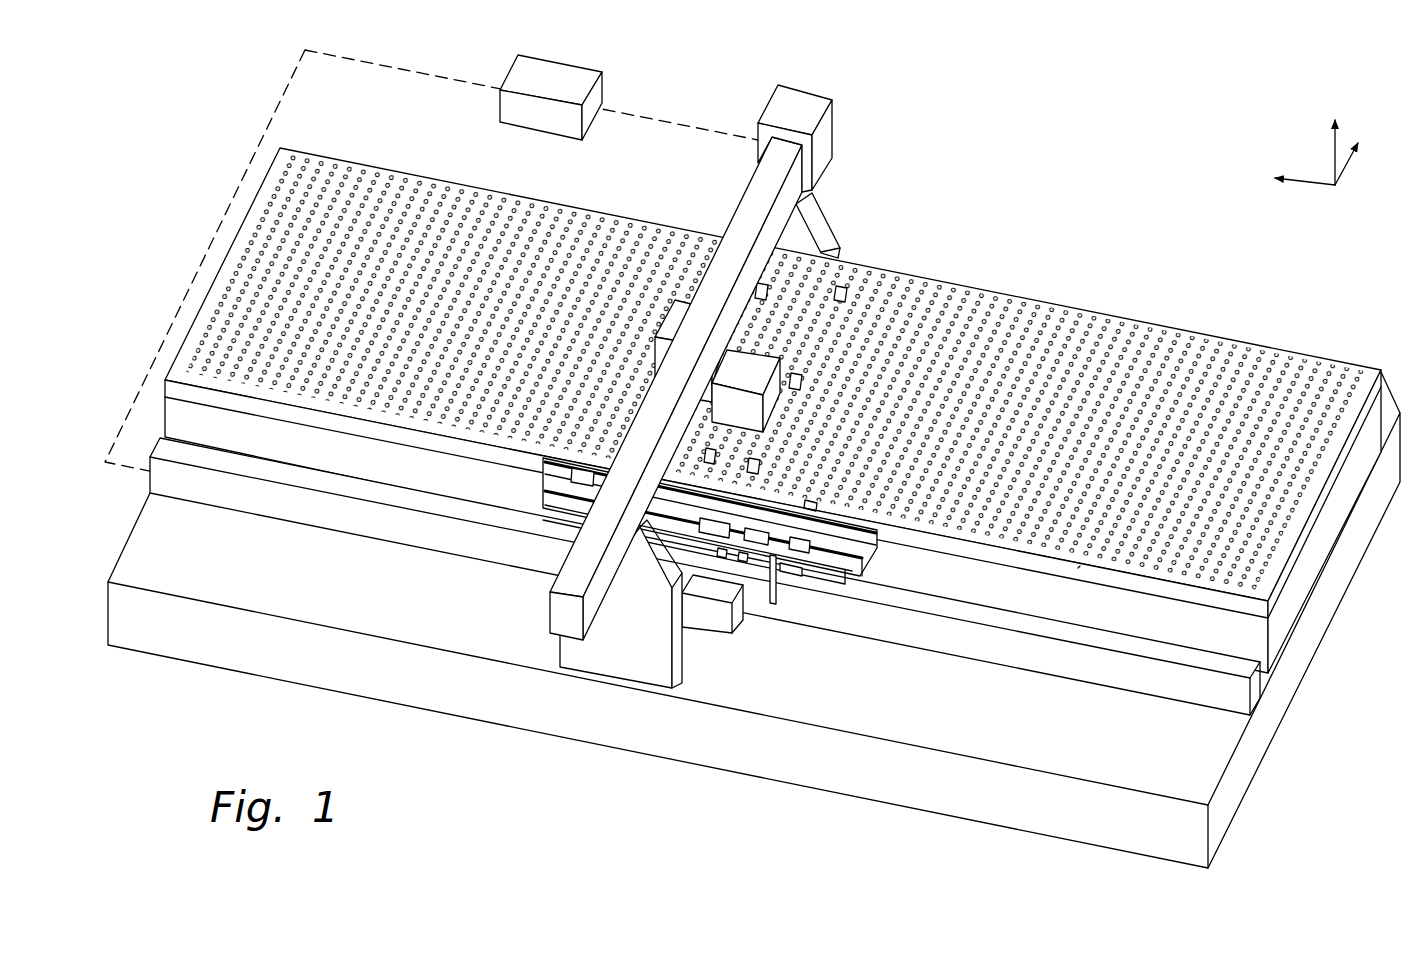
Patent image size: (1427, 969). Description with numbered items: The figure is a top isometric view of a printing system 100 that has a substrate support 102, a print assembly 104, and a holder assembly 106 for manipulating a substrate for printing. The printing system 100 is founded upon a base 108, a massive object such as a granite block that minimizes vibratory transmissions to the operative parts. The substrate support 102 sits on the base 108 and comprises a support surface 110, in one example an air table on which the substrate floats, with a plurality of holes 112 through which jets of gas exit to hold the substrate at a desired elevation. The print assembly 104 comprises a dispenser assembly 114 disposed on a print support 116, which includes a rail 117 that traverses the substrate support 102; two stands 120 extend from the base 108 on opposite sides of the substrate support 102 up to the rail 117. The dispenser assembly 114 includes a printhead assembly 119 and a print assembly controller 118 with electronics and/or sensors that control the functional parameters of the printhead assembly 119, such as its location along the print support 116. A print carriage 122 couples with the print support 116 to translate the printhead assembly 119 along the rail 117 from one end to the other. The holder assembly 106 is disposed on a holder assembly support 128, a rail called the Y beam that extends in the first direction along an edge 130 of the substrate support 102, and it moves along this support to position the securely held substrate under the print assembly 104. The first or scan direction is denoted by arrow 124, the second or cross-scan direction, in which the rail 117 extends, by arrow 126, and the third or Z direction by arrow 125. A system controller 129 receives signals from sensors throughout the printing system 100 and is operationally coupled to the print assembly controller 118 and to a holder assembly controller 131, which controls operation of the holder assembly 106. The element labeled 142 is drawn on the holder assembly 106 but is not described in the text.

The printing system 100 is at (1140, 74).
The substrate support 102 is at (782, 410).
The print assembly 104 is at (718, 377).
The holder assembly 106 is at (734, 570).
The base 108 is at (724, 766).
The support surface 110 is at (775, 371).
The holes 112 is at (996, 301).
The dispenser assembly 114 is at (792, 342).
The print support 116 is at (718, 384).
The rail 117 is at (735, 214).
The print assembly controller 118 is at (808, 97).
The printhead assembly 119 is at (757, 425).
The stands 120 is at (612, 670).
The print carriage 122 is at (708, 341).
The arrow 124 is at (1300, 196).
The arrow 125 is at (1322, 161).
The arrow 126 is at (1345, 185).
The holder assembly support 128 is at (975, 655).
The system controller 129 is at (510, 121).
The edge 130 is at (1078, 568).
The holder assembly controller 131 is at (713, 624).
The sensor 142 is at (817, 504).